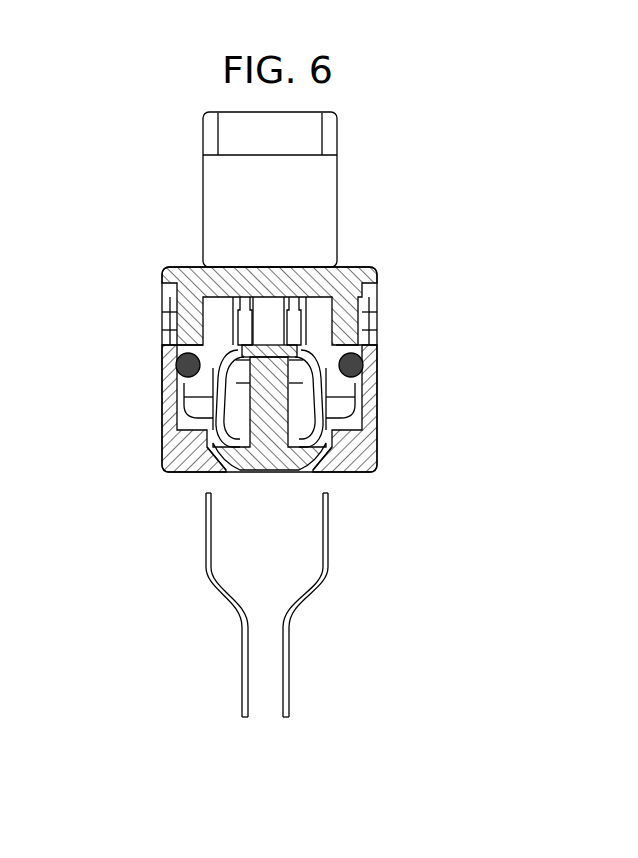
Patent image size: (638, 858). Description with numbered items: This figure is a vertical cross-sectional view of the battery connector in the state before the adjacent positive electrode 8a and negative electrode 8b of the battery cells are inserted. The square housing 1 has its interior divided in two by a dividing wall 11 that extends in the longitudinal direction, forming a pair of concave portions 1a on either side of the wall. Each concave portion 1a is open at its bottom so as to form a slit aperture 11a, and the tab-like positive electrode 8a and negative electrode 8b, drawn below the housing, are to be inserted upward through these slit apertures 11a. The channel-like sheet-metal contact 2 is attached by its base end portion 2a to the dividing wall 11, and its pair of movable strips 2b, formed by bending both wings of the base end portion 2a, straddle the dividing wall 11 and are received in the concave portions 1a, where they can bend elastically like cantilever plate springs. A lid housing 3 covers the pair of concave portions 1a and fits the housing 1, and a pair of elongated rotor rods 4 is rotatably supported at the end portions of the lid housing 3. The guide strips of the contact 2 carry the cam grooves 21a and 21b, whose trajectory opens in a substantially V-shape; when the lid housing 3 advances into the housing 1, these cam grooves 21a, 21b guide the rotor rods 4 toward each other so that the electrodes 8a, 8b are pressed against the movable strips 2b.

The housing 1 is at (161, 474).
The concave portion 1a is at (174, 430).
The contact 2 is at (310, 340).
The base end portion 2a is at (297, 345).
The movable strip 2b is at (183, 386).
The lid housing 3 is at (185, 263).
The rotor rod 4 is at (175, 354).
The positive electrode 8a is at (204, 556).
The negative electrode 8b is at (330, 548).
The dividing wall 11 is at (270, 458).
The slit aperture 11a is at (205, 464).
The cam groove 21a is at (210, 412).
The cam groove 21b is at (340, 408).